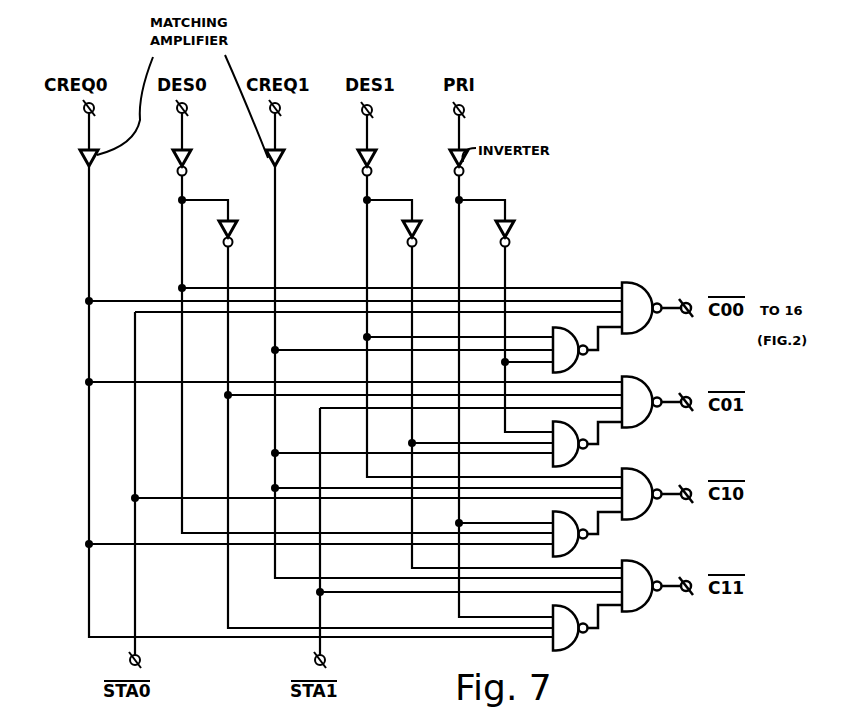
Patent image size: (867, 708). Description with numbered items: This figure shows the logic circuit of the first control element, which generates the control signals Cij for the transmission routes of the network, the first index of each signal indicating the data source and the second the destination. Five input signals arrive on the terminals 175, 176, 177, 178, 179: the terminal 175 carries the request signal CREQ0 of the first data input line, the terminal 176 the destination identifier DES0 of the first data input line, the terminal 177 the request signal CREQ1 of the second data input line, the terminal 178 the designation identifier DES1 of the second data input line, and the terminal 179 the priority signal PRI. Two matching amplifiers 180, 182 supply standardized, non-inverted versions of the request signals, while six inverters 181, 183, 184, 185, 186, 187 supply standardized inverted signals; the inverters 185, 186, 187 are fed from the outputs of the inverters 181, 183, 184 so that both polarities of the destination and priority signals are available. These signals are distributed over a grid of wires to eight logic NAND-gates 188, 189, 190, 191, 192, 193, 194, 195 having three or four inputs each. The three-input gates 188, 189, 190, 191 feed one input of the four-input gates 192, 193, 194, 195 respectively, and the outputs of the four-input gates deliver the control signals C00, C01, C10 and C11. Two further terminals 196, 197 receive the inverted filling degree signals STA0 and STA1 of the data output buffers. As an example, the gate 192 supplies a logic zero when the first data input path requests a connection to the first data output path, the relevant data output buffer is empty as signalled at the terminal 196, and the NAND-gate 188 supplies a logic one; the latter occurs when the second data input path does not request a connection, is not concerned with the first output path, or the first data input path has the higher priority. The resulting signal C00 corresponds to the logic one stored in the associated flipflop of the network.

The terminal 175 is at (94, 108).
The terminal 176 is at (187, 108).
The terminal 177 is at (280, 108).
The terminal 178 is at (372, 110).
The terminal 179 is at (464, 110).
The matching amplifier 180 is at (92, 163).
The inverter 181 is at (186, 170).
The matching amplifier 182 is at (278, 163).
The inverter 183 is at (371, 170).
The inverter 184 is at (463, 170).
The inverter 185 is at (234, 233).
The inverter 186 is at (405, 233).
The inverter 187 is at (498, 233).
The NAND-gate 188 is at (570, 370).
The NAND-gate 189 is at (570, 464).
The NAND-gate 190 is at (570, 554).
The NAND-gate 191 is at (570, 648).
The NAND-gate 192 is at (640, 283).
The NAND-gate 193 is at (640, 377).
The NAND-gate 194 is at (640, 469).
The NAND-gate 195 is at (640, 561).
The terminal 196 is at (140, 660).
The terminal 197 is at (325, 660).